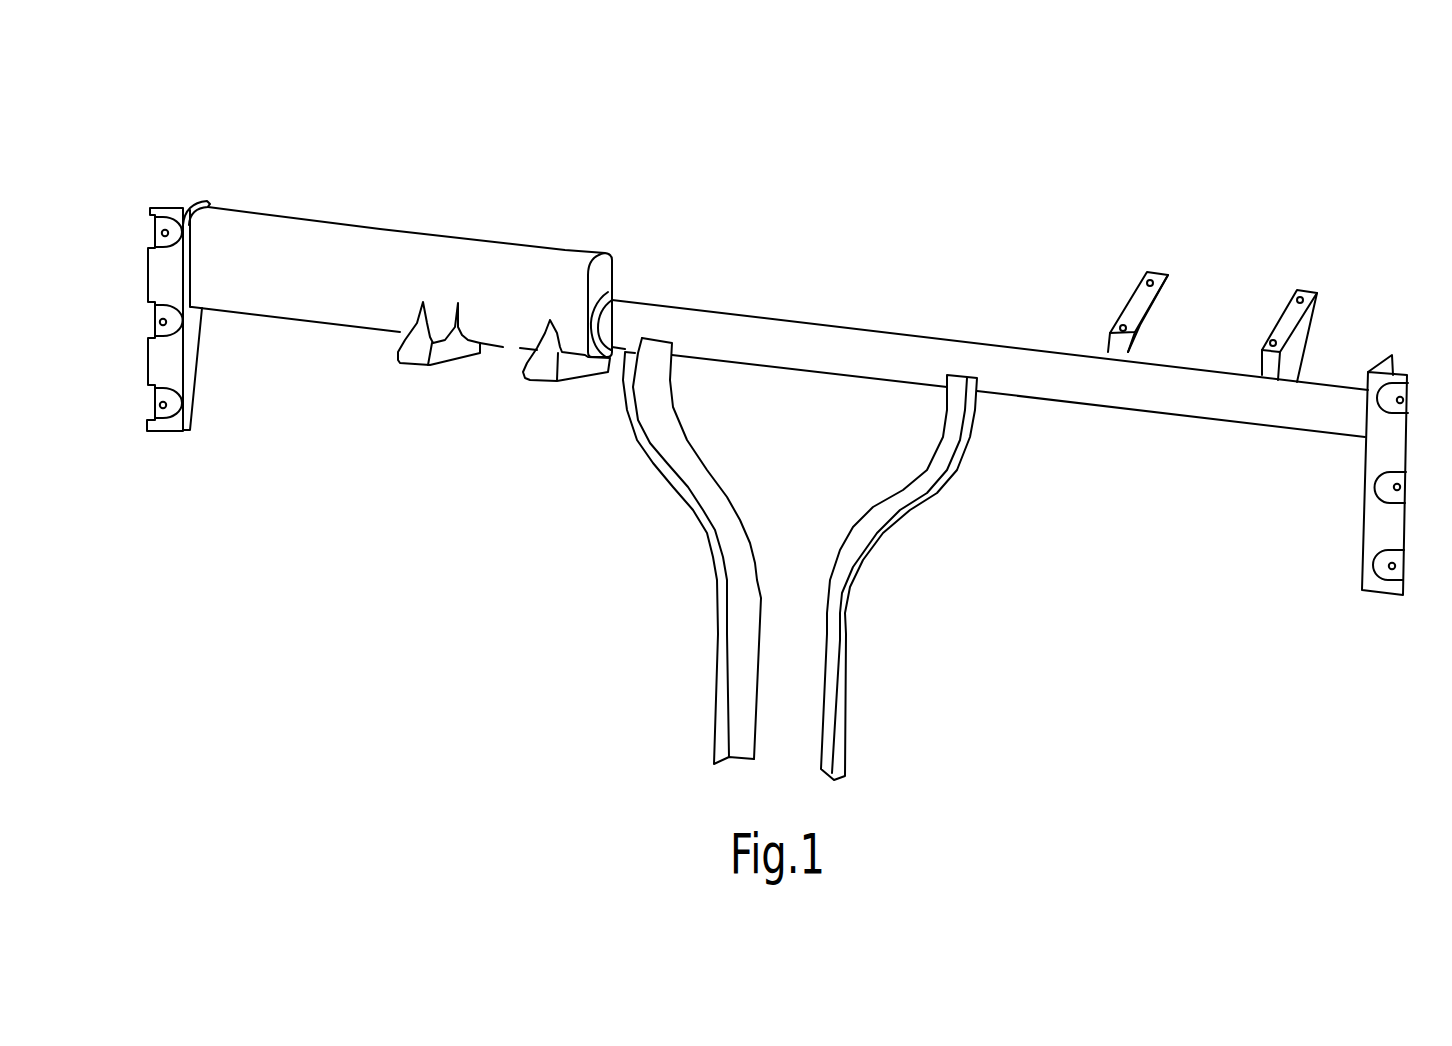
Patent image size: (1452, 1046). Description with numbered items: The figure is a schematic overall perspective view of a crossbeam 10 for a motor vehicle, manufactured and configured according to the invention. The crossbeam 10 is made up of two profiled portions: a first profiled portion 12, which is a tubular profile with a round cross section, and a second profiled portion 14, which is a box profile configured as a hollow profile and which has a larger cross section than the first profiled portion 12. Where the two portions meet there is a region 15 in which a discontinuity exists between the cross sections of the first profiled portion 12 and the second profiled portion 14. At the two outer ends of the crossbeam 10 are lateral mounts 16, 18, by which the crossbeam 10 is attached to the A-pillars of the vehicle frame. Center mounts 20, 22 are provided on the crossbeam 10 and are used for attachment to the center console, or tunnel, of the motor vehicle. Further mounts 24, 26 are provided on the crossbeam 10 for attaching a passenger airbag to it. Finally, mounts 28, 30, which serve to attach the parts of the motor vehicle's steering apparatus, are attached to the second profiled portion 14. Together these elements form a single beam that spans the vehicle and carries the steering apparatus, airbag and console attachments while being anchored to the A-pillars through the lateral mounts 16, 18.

The crossbeam 10 is at (853, 284).
The first profiled portion 12 is at (795, 346).
The second profiled portion 14 is at (327, 300).
The region 15 is at (596, 246).
The lateral mount 16 is at (158, 365).
The lateral mount 18 is at (1383, 540).
The center mount 20 is at (741, 642).
The center mount 22 is at (845, 557).
The mount 24 is at (1143, 295).
The mount 26 is at (1290, 317).
The mount 28 is at (420, 348).
The mount 30 is at (547, 363).